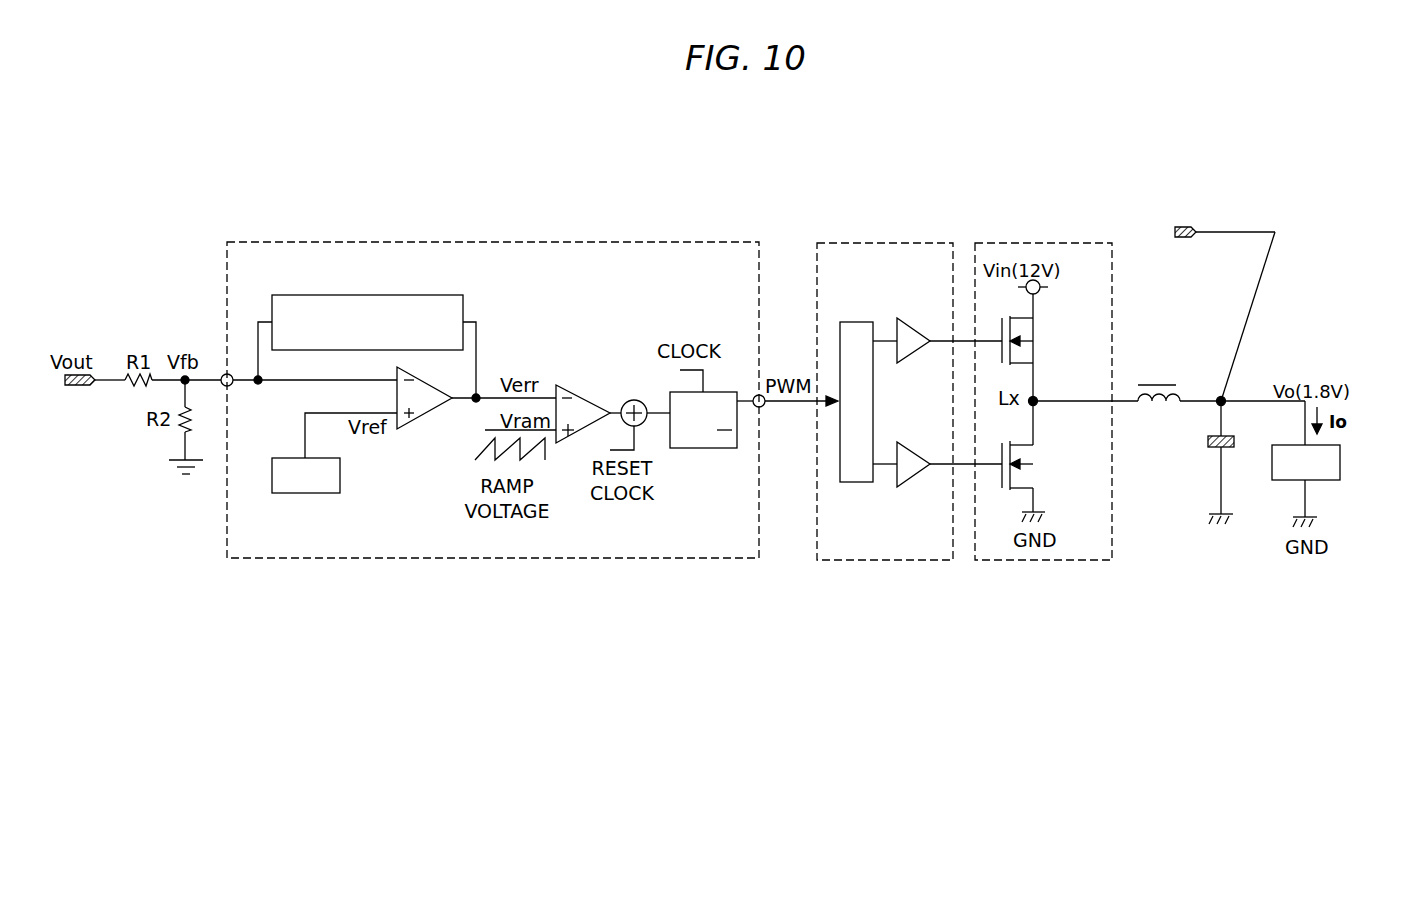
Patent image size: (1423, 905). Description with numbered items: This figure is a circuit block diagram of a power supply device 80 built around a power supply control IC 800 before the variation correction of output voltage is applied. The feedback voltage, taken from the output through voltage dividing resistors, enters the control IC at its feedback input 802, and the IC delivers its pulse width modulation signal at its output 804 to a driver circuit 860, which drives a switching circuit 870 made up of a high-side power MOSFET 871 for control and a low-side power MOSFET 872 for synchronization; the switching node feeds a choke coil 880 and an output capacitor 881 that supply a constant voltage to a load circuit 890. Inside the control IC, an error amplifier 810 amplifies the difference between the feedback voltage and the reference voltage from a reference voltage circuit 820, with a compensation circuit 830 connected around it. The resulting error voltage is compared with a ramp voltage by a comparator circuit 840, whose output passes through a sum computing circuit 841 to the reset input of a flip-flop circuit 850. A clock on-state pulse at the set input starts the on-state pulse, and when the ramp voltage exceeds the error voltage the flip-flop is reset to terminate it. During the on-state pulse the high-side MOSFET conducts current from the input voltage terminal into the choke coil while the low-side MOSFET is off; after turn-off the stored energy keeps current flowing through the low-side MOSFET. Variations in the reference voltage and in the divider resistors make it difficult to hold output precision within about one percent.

The power supply device 80 is at (1222, 172).
The power supply control IC 800 is at (495, 242).
The feedback input terminal 802 is at (224, 374).
The PWM output terminal 804 is at (763, 408).
The error amplifier 810 is at (423, 416).
The reference voltage circuit 820 is at (306, 493).
The compensation circuit 830 is at (366, 295).
The comparator circuit 840 is at (583, 399).
The sum computing circuit 841 is at (634, 400).
The flip-flop circuit 850 is at (703, 448).
The driver circuit 860 is at (882, 243).
The switching circuit 870 is at (1041, 243).
The high-side power MOSFET 871 is at (1040, 332).
The low-side power MOSFET 872 is at (1040, 454).
The choke coil 880 is at (1178, 388).
The output capacitor 881 is at (1208, 441).
The load circuit 890 is at (1342, 463).